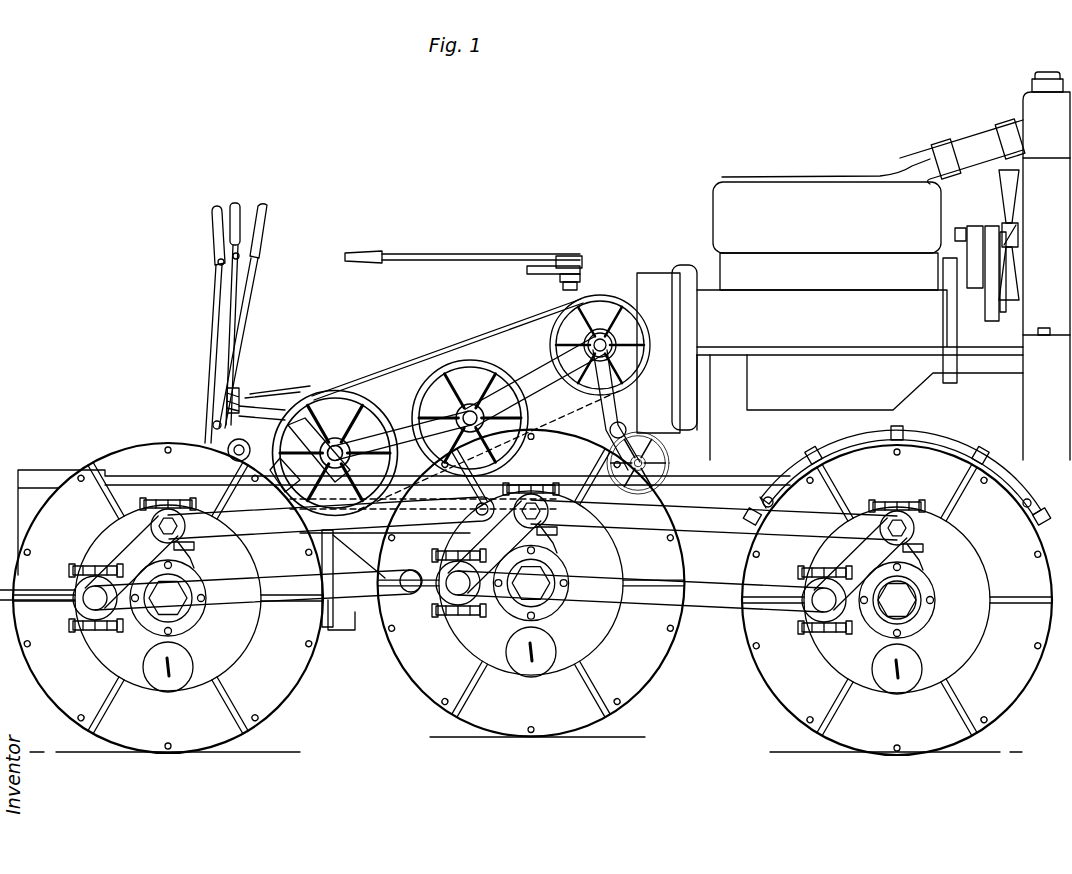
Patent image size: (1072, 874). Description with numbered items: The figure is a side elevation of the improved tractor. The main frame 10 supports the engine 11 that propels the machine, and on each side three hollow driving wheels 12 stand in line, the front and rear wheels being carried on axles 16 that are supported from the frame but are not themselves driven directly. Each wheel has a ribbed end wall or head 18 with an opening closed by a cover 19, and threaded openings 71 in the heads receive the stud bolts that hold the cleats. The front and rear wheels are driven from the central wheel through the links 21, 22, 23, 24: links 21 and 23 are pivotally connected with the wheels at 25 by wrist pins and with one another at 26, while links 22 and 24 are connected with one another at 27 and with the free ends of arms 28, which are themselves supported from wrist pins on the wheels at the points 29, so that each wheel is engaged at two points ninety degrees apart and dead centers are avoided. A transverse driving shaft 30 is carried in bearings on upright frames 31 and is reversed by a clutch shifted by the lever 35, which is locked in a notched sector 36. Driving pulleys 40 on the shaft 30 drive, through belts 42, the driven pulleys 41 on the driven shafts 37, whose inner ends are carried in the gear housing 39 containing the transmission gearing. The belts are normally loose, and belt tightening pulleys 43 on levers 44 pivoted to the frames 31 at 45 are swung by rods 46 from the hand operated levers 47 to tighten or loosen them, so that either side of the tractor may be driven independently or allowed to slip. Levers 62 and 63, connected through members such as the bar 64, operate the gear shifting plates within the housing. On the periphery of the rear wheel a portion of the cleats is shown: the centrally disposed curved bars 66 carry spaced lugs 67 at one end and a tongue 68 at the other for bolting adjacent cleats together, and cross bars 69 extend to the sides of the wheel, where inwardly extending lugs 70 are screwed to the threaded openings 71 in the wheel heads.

The main frame 10 is at (766, 478).
The engine 11 is at (815, 190).
The driving wheels 12 is at (80, 728).
The axles 16 is at (905, 597).
The end wall or head 18 is at (290, 700).
The cover 19 is at (186, 660).
The link 21 is at (645, 528).
The link 22 is at (645, 608).
The link 23 is at (420, 530).
The link 24 is at (307, 582).
The pivotal connection 25 is at (165, 506).
The pivotal connection 26 is at (455, 496).
The pivotal connection 27 is at (410, 594).
The arms 28 is at (122, 556).
The wrist pin points 29 is at (93, 604).
The driving shaft 30 is at (618, 336).
The upright frames 31 is at (532, 376).
The lever 35 is at (463, 255).
The notched sector 36 is at (548, 264).
The driven shaft 37 is at (296, 466).
The gear housing 39 is at (360, 634).
The driving pulley 40 is at (603, 294).
The driven pulley 41 is at (333, 392).
The belt 42 is at (474, 360).
The belt tightening pulley 43 is at (670, 467).
The lever 44 is at (622, 438).
The pivot 45 is at (627, 408).
The rod 46 is at (262, 396).
The hand operated lever 47 is at (212, 374).
The lever 62 is at (247, 365).
The lever 63 is at (240, 206).
The bar or rod 64 is at (281, 400).
The centrally disposed bar 66 is at (921, 438).
The spaced lugs 67 is at (1031, 506).
The tongue 68 is at (775, 503).
The cross bars 69 is at (895, 440).
The inwardly extending lugs 70 is at (912, 452).
The threaded openings 71 is at (168, 748).